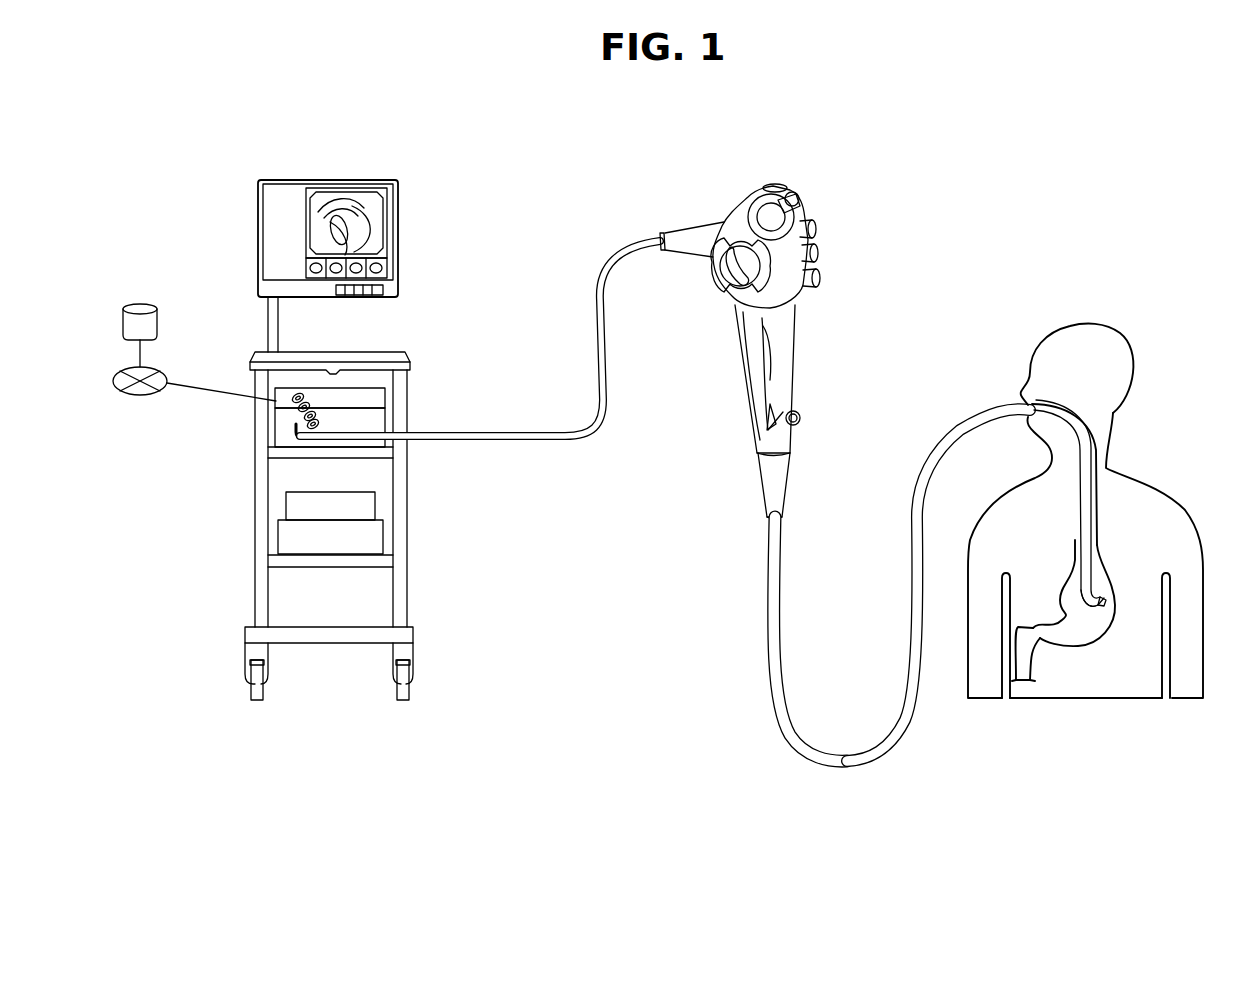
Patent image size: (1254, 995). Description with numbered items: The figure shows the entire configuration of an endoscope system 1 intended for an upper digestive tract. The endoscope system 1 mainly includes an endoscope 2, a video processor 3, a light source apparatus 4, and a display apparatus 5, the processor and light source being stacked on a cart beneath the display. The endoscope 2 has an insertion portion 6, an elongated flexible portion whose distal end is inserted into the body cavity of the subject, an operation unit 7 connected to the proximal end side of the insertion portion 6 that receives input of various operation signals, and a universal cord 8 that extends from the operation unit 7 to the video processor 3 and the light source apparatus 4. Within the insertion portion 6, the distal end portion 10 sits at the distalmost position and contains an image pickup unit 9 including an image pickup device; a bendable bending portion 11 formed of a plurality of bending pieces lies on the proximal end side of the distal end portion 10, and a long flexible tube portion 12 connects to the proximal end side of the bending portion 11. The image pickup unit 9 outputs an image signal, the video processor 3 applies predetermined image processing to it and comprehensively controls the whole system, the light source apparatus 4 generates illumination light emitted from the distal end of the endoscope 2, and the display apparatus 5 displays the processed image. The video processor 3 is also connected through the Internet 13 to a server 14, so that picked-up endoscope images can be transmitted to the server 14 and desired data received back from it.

The endoscope system 1 is at (554, 146).
The endoscope 2 is at (816, 193).
The video processor 3 is at (379, 396).
The light source apparatus 4 is at (379, 421).
The display apparatus 5 is at (329, 180).
The insertion portion 6 is at (746, 653).
The operation unit 7 is at (824, 272).
The universal cord 8 is at (590, 270).
The image pickup unit 9 is at (1105, 596).
The distal end portion 10 is at (1108, 588).
The bending portion 11 is at (1080, 608).
The flexible tube portion 12 is at (917, 486).
The Internet 13 is at (165, 374).
The server 14 is at (140, 300).